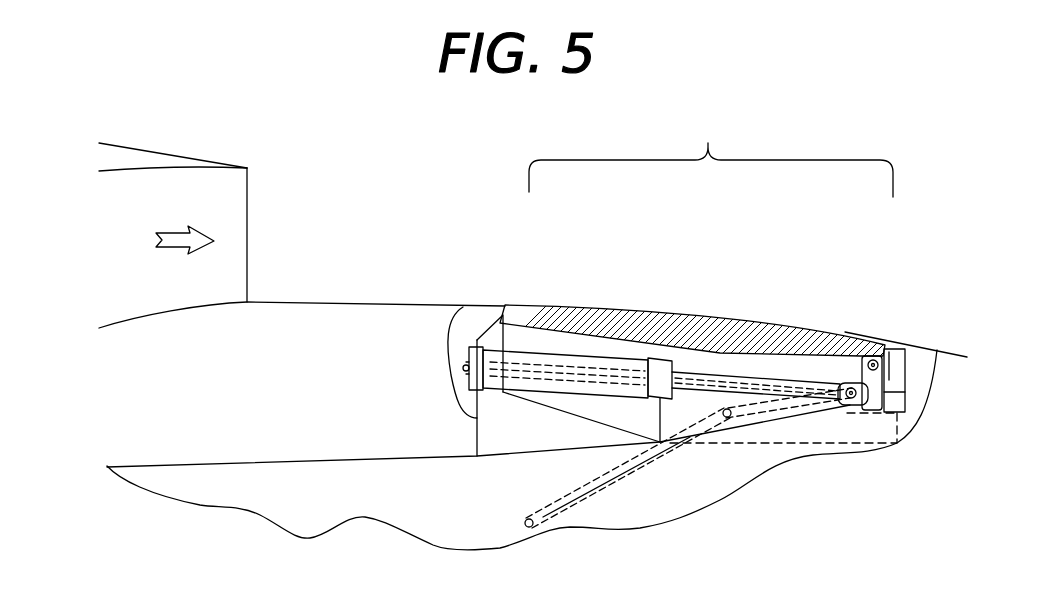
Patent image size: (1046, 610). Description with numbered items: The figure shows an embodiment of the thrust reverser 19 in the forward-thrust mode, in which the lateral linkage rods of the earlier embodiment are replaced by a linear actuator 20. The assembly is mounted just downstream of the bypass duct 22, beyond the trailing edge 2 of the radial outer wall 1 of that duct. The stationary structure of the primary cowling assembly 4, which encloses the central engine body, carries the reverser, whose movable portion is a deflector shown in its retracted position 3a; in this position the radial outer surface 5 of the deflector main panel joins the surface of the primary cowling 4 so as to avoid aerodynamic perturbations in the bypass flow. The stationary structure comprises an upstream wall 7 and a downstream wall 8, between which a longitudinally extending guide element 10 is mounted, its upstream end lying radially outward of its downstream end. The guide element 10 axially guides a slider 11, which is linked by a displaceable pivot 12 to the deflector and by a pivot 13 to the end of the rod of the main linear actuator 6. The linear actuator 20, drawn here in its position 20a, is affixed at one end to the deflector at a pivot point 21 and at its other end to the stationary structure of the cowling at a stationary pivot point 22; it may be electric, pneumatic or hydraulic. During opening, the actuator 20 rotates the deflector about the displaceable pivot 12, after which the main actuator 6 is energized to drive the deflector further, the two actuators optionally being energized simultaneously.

The radial outer wall 1 is at (167, 162).
The trailing edge 2 is at (248, 168).
The deflector position 3a is at (755, 318).
The primary cowling assembly 4 is at (380, 328).
The radial outer surface 5 is at (650, 312).
The linear actuator 6 is at (558, 312).
The upstream wall 7 is at (478, 412).
The downstream wall 8 is at (903, 342).
The guide element 10 is at (887, 397).
The slider 11 is at (870, 400).
The displaceable pivot 12 is at (873, 358).
The pivot 13 is at (848, 400).
The thrust reverser 19 is at (711, 152).
The linear actuator 20 is at (570, 480).
The linear actuator position 20a is at (617, 483).
The pivot point 21 is at (735, 422).
The bypass duct 22 is at (507, 573).